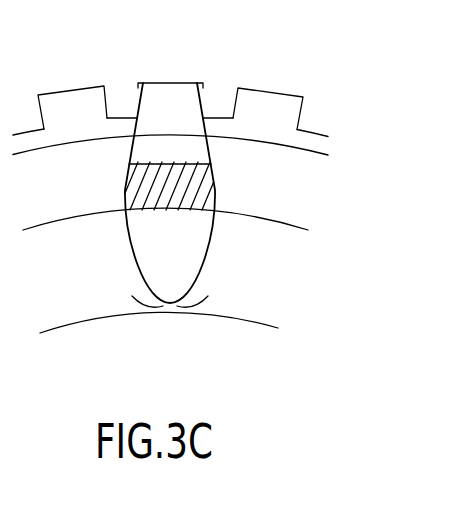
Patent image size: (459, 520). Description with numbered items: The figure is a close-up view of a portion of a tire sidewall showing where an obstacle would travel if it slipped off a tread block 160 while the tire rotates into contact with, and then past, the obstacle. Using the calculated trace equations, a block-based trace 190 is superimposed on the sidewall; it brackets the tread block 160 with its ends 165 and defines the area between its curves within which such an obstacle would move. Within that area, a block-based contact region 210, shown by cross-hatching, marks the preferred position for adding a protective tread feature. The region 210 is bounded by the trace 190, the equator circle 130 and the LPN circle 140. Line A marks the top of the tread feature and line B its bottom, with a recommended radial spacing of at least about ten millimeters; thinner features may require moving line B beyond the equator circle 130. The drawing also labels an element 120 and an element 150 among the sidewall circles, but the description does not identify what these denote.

The inner layer / core 120 is at (240, 321).
The equator circle 130 is at (296, 220).
The LPN circle 140 is at (187, 168).
The outer layer 150 is at (310, 146).
The tread block 160 is at (172, 92).
The ends 165 is at (136, 110).
The block-based trace 190 is at (127, 265).
The block-based contact region 210 is at (132, 194).